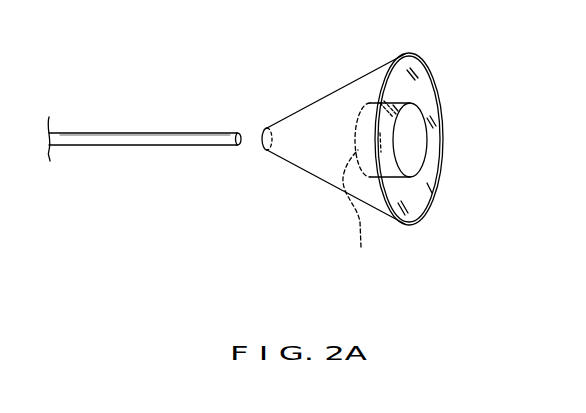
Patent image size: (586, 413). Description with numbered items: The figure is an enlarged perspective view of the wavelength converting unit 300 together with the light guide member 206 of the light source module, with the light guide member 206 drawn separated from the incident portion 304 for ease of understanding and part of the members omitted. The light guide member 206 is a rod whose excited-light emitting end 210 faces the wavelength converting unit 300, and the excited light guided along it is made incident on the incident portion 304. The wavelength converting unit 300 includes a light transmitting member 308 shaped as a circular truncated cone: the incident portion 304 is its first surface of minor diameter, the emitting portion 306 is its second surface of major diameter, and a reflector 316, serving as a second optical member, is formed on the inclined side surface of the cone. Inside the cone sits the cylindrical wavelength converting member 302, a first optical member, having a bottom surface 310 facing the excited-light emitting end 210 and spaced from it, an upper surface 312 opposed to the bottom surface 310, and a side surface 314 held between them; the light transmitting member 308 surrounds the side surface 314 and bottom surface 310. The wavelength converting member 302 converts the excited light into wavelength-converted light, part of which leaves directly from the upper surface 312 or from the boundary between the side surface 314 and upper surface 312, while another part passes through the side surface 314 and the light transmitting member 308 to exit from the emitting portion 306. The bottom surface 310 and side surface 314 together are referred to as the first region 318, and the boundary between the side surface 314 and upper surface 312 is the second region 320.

The light guide member 206 is at (121, 143).
The excited-light emitting end 210 is at (243, 148).
The wavelength converting unit 300 is at (310, 84).
The wavelength converting member 302 is at (423, 163).
The incident portion 304 is at (262, 134).
The emitting portion 306 is at (436, 60).
The light transmitting member 308 is at (372, 83).
The bottom surface 310 is at (358, 210).
The upper surface 312 is at (417, 143).
The side surface 314 is at (427, 217).
The reflector 316 is at (423, 53).
The first region 318 is at (455, 268).
The second region 320 is at (420, 106).